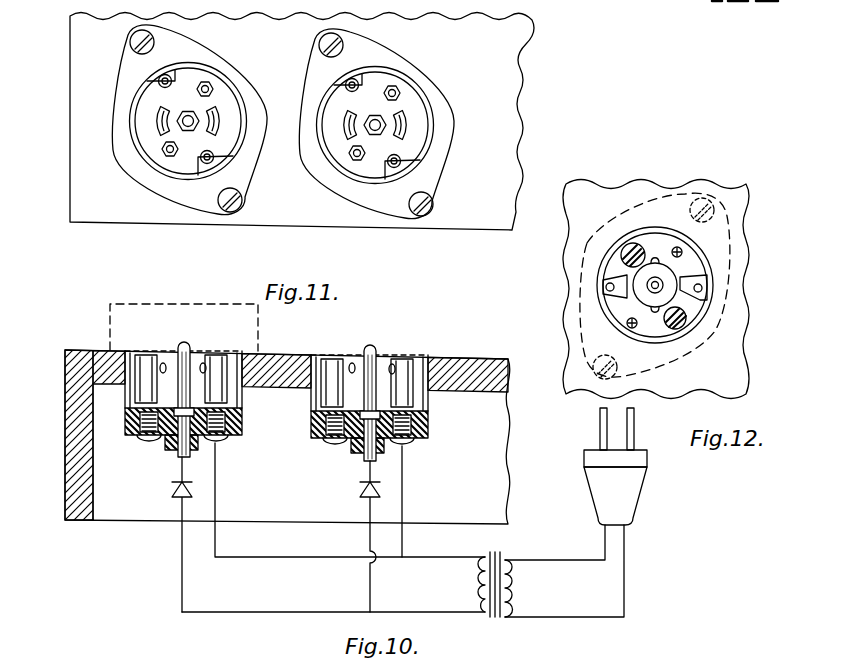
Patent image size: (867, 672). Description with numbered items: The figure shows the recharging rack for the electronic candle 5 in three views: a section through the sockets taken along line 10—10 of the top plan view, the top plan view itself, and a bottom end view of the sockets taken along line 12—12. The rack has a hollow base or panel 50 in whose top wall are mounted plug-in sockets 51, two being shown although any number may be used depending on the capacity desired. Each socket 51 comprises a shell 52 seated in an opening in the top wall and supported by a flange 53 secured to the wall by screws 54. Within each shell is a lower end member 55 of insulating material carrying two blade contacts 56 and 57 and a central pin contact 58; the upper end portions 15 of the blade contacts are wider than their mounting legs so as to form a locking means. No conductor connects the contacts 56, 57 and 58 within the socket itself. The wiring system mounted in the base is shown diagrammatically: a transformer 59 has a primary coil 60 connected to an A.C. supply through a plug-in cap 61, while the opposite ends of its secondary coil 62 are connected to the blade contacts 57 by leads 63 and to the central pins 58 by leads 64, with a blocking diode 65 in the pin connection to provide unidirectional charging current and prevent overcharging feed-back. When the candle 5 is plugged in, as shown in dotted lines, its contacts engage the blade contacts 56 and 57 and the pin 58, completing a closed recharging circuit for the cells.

In FIG. 10, the electronic candle 5 is at (258, 325).
In FIG. 11, the section line 10 is at (332, 208).
In FIG. 10, the section line 12 is at (280, 478).
In FIG. 10, the upper end portions of blade contacts 15 is at (352, 361).
In FIG. 11, the hollow base or panel 50 is at (508, 133).
In FIG. 12, the hollow base or panel 50 is at (725, 372).
In FIG. 10, the hollow base or panel 50 is at (480, 365).
In FIG. 11, the plug-in socket 51 is at (128, 185).
In FIG. 12, the plug-in socket 51 is at (637, 348).
In FIG. 10, the plug-in socket 51 is at (122, 396).
In FIG. 10, the shell 52 is at (243, 405).
In FIG. 11, the flange 53 is at (246, 174).
In FIG. 12, the flange 53 is at (724, 330).
In FIG. 10, the flange 53 is at (440, 355).
In FIG. 11, the screws 54 is at (135, 50).
In FIG. 12, the screws 54 is at (718, 215).
In FIG. 12, the lower end member 55 is at (613, 313).
In FIG. 10, the lower end member 55 is at (130, 430).
In FIG. 11, the blade contact 56 is at (160, 132).
In FIG. 12, the blade contact 56 is at (603, 302).
In FIG. 10, the blade contact 56 is at (158, 372).
In FIG. 11, the blade contact 57 is at (219, 125).
In FIG. 12, the blade contact 57 is at (706, 263).
In FIG. 10, the blade contact 57 is at (212, 384).
In FIG. 11, the central pin contact 58 is at (188, 115).
In FIG. 12, the central pin contact 58 is at (657, 284).
In FIG. 10, the central pin contact 58 is at (190, 346).
In FIG. 10, the transformer 59 is at (496, 618).
In FIG. 10, the primary coil 60 is at (514, 584).
In FIG. 10, the plug-in cap 61 is at (634, 493).
In FIG. 10, the secondary coil 62 is at (464, 584).
In FIG. 10, the leads 63 is at (403, 490).
In FIG. 10, the leads 64 is at (369, 583).
In FIG. 10, the blocking diode or rectifier 65 is at (170, 490).